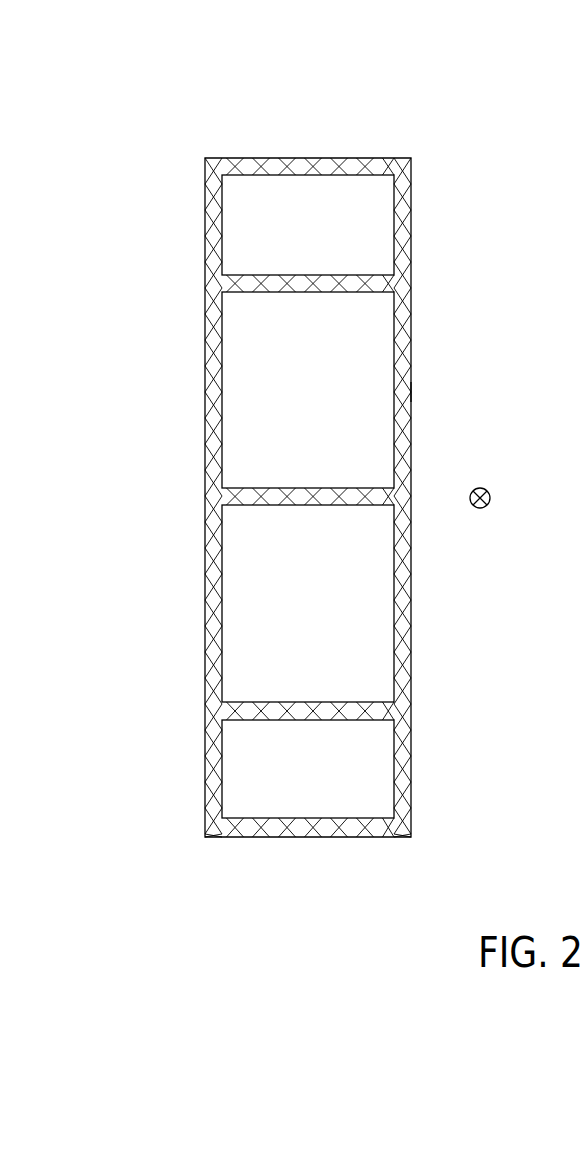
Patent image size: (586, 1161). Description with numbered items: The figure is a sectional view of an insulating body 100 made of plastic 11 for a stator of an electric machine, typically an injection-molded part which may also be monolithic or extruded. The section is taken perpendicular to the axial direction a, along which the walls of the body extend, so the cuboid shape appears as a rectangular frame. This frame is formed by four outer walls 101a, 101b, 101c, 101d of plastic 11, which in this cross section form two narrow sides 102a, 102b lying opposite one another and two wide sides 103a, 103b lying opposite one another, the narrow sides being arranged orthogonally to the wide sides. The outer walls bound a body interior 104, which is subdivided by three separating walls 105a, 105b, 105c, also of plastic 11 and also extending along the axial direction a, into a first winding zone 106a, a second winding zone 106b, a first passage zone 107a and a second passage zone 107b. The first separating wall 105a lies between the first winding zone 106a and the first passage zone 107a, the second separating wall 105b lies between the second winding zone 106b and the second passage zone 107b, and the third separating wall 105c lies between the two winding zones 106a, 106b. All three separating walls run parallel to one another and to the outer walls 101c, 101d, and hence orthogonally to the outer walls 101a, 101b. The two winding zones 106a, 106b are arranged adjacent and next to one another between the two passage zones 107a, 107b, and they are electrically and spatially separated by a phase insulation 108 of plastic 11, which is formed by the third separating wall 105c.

The insulating body 100 is at (495, 206).
The plastic 11 is at (411, 392).
The axial direction a is at (490, 498).
The outer wall 101a is at (311, 869).
The outer wall 101b is at (313, 127).
The outer wall 101c is at (131, 497).
The outer wall 101d is at (484, 497).
The narrow side 102a is at (308, 837).
The narrow side 102b is at (308, 157).
The wide side 103a is at (205, 605).
The wide side 103b is at (411, 607).
The body interior 104 is at (255, 427).
The first separating wall 105a is at (300, 711).
The second separating wall 105b is at (305, 282).
The third separating wall 105c is at (311, 462).
The first winding zone 106a is at (332, 609).
The second winding zone 106b is at (327, 398).
The first passage zone 107a is at (332, 779).
The second passage zone 107b is at (327, 240).
The phase insulation 108 is at (290, 494).